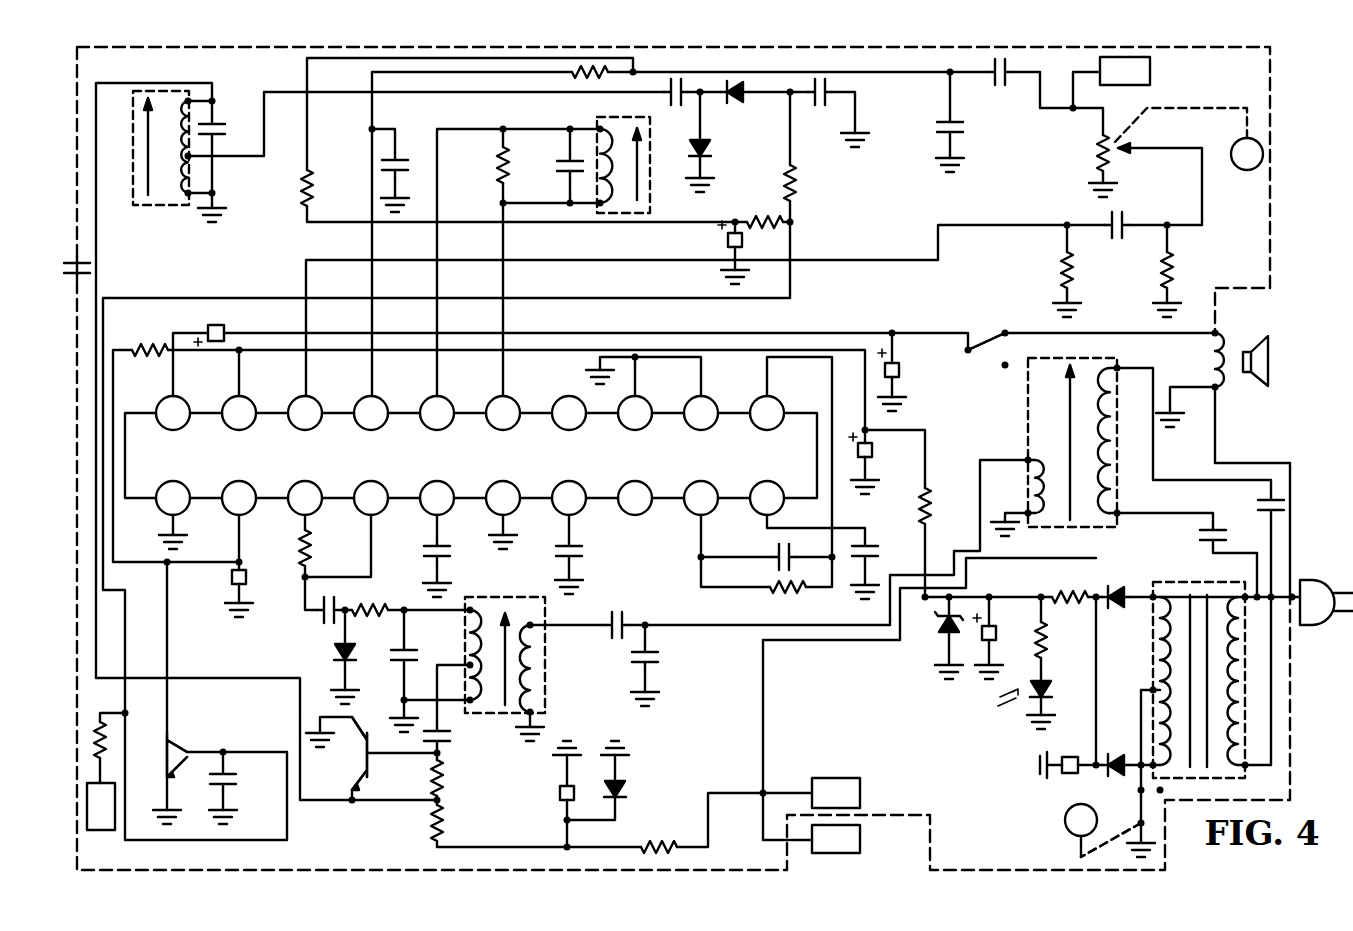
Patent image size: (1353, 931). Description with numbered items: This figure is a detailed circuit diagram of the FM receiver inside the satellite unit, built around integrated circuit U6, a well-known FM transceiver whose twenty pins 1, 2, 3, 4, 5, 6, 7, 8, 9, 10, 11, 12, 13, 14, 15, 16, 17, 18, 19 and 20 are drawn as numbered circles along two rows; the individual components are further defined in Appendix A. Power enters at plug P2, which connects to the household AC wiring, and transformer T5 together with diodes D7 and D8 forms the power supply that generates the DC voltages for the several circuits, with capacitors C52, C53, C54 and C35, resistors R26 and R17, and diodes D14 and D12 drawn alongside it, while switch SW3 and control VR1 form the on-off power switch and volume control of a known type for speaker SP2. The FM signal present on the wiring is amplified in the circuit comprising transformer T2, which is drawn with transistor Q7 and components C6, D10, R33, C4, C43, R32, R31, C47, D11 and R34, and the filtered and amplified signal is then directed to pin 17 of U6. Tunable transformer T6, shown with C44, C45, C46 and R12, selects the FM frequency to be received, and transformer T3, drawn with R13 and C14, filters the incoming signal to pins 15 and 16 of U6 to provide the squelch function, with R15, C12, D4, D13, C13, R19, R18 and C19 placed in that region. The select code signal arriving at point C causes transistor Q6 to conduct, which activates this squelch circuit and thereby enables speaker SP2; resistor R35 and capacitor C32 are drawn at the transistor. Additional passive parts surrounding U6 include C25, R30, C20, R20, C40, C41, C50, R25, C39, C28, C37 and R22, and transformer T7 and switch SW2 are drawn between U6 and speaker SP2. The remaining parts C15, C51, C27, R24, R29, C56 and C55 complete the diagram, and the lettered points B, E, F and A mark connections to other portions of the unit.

The integrated circuit U6 is at (470, 455).
The pin 1 of U6 1 is at (173, 498).
The pin 2 of U6 2 is at (239, 498).
The pin 3 of U6 3 is at (305, 498).
The pin 4 of U6 4 is at (371, 498).
The pin 5 of U6 5 is at (437, 498).
The pin 6 of U6 6 is at (503, 498).
The pin 7 of U6 7 is at (569, 498).
The pin 8 of U6 8 is at (635, 498).
The pin 9 of U6 9 is at (701, 498).
The pin 10 of U6 10 is at (767, 498).
The pin 11 of U6 11 is at (767, 413).
The satellite unit 12 is at (701, 413).
The pin 13 of U6 13 is at (635, 413).
The pin 14 of U6 14 is at (569, 413).
The pin 15 of U6 15 is at (503, 413).
The pin 16 of U6 16 is at (437, 413).
The pin 17 of U6 17 is at (371, 413).
The pin 18 of U6 18 is at (305, 413).
The pin 19 of U6 19 is at (239, 413).
The pin 20 of U6 20 is at (173, 413).
The transformer T6 is at (161, 159).
The capacitor C44 is at (227, 119).
The resistor R12 is at (285, 188).
The capacitor C46 is at (408, 161).
The capacitor C45 is at (99, 268).
The capacitor C25 is at (207, 327).
The resistor R30 is at (150, 363).
The resistor R15 is at (572, 79).
The transformer T3 is at (623, 155).
The resistor R13 is at (484, 165).
The capacitor C14 is at (552, 166).
The capacitor C12 is at (676, 104).
The diode D4 is at (736, 101).
The diode D13 is at (683, 148).
The capacitor C13 is at (822, 104).
The resistor R19 is at (810, 183).
The resistor R18 is at (762, 213).
The capacitor C19 is at (752, 237).
The capacitor C15 is at (1000, 83).
The capacitor C51 is at (971, 127).
The terminal B is at (1125, 71).
The volume control VR1 is at (1081, 153).
The terminal E is at (1164, 487).
The capacitor C27 is at (1130, 217).
The resistor R24 is at (1043, 270).
The resistor R29 is at (1143, 270).
The switch SW2 is at (983, 330).
The speaker SP2 is at (1246, 345).
The transformer T7 is at (1072, 434).
The capacitor C28 is at (909, 365).
The capacitor C37 is at (881, 447).
The resistor R22 is at (945, 506).
The capacitor C39 is at (883, 551).
The capacitor C53 is at (1248, 505).
The capacitor C52 is at (1191, 536).
The plug P2 is at (1326, 591).
The transformer T5 is at (1199, 671).
The resistor R26 is at (1070, 585).
The diode D7 is at (1116, 588).
The zener diode D14 is at (934, 624).
The capacitor C54 is at (1001, 619).
The resistor R17 is at (1059, 640).
The red LED D12 is at (1021, 692).
The diode D8 is at (1116, 757).
The capacitor C35 is at (1070, 778).
The power switch SW3 is at (1111, 824).
The capacitor C41 is at (588, 551).
The capacitor C50 is at (767, 552).
The resistor R25 is at (770, 583).
The capacitor C40 is at (419, 551).
The resistor R20 is at (285, 548).
The capacitor C20 is at (217, 579).
The capacitor C6 is at (319, 618).
The diode D10 is at (325, 652).
The resistor R33 is at (373, 622).
The capacitor C4 is at (393, 655).
The transformer T2 is at (505, 645).
The capacitor C56 is at (617, 615).
The capacitor C55 is at (666, 660).
The capacitor C43 is at (459, 736).
The transistor Q6 is at (167, 755).
The capacitor C32 is at (245, 779).
The select code signal C is at (101, 806).
The resistor R35 is at (104, 723).
The transistor Q7 is at (352, 753).
The resistor R32 is at (417, 778).
The resistor R31 is at (417, 823).
The capacitor C47 is at (546, 793).
The diode D11 is at (633, 789).
The resistor R34 is at (659, 836).
The terminal F is at (836, 793).
The terminal A is at (836, 839).